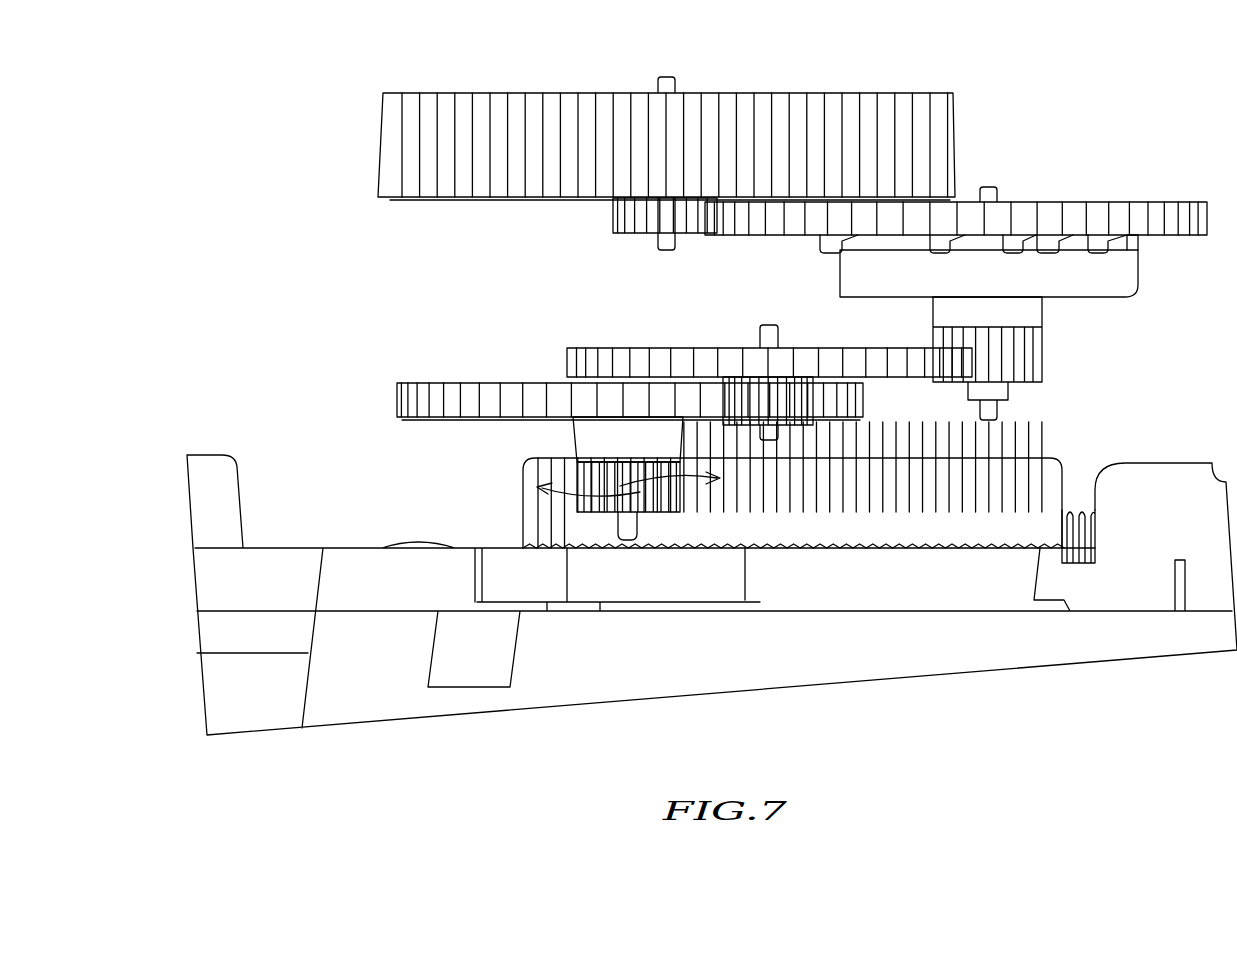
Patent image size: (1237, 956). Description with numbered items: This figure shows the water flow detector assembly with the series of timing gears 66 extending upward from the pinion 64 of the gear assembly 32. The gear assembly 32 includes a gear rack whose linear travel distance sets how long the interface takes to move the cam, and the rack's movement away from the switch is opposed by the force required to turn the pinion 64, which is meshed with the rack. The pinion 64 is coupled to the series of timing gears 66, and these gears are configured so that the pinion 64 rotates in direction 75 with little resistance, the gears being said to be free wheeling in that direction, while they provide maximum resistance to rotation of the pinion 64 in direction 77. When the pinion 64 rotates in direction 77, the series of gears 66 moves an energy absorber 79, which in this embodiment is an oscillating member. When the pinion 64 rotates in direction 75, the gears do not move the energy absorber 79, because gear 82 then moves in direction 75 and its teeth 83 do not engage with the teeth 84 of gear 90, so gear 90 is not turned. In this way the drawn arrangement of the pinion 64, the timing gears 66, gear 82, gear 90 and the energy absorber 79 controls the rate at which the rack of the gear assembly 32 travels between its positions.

The gear assembly 32 is at (308, 407).
The pinion 64 is at (577, 437).
The series of timing gears 66 is at (490, 327).
The direction 75 is at (586, 500).
The direction 77 is at (659, 490).
The energy absorber 79 is at (905, 108).
The gear 82 is at (989, 327).
The teeth 83 is at (1012, 252).
The teeth 84 is at (1058, 252).
The gear 90 is at (1095, 210).